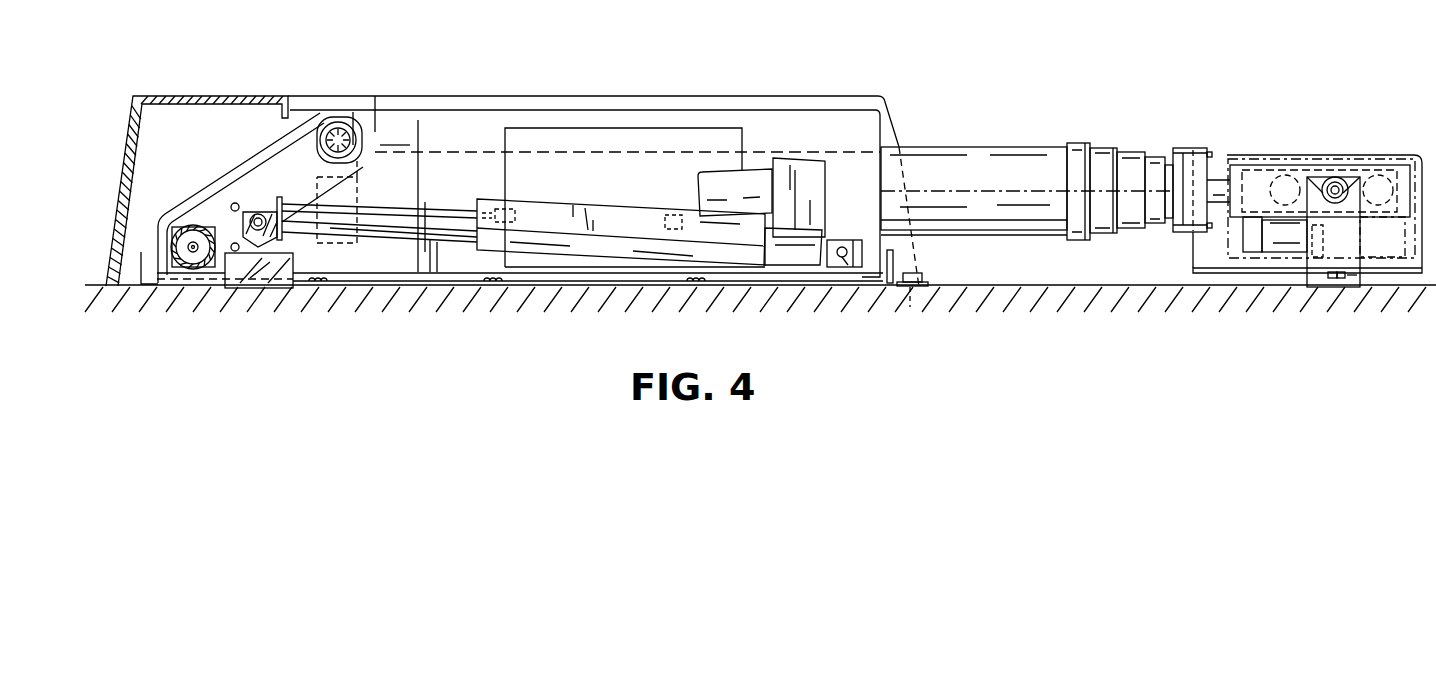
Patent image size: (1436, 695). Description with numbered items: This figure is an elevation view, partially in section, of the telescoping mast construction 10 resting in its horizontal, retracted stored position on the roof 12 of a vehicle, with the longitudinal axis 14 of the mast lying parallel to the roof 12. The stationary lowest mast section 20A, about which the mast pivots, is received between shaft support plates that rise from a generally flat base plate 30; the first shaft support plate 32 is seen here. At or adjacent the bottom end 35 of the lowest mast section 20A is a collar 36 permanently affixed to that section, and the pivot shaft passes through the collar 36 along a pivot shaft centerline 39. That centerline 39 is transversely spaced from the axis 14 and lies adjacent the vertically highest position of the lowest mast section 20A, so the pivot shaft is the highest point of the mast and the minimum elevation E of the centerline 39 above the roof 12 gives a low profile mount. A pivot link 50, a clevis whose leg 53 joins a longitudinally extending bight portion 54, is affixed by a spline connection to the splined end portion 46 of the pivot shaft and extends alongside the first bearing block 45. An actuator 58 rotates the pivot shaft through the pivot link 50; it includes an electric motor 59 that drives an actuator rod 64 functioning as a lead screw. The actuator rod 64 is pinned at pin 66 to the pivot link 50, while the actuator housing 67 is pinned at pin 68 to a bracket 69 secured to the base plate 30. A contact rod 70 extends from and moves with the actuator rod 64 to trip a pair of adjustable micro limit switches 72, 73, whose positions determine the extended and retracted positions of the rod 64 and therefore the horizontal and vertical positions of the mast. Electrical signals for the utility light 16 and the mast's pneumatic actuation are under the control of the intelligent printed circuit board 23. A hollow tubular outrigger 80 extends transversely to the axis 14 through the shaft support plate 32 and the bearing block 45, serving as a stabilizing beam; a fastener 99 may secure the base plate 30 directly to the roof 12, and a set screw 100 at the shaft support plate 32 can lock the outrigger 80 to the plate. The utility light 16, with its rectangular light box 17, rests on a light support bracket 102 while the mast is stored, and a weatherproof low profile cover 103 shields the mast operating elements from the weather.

The telescoping mast construction 10 is at (976, 106).
The roof 12 is at (1040, 288).
The longitudinal axis 14 is at (1018, 190).
The utility light 16 is at (1366, 146).
The rectangular box 17 is at (1221, 150).
The lowest mast section 20A is at (923, 138).
The printed circuit board 23 is at (603, 140).
The base plate 30 is at (426, 290).
The first shaft support plate 32 is at (455, 127).
The bottom end 35 is at (393, 134).
The collar 36 is at (331, 250).
The pivot shaft centerline 39 is at (325, 125).
The first bearing block 45 is at (208, 208).
The splined end portion 46 is at (357, 168).
The pivot link 50 is at (276, 166).
The leg 53 is at (267, 200).
The bight portion 54 is at (342, 122).
The actuator 58 is at (592, 262).
The electric motor 59 is at (716, 176).
The actuator rod 64 is at (456, 236).
The pin 66 is at (251, 214).
The actuator housing 67 is at (798, 265).
The pin 68 is at (847, 258).
The bracket 69 is at (865, 238).
The contact rod 70 is at (447, 206).
The micro limit switch 72 is at (510, 209).
The micro limit switch 73 is at (672, 212).
The tubular outrigger 80 is at (186, 262).
The fastener 99 is at (925, 278).
The set screw 100 is at (157, 242).
The light support bracket 102 is at (1323, 262).
The weatherproof low profile cover 103 is at (790, 95).
The minimum elevation E is at (393, 297).